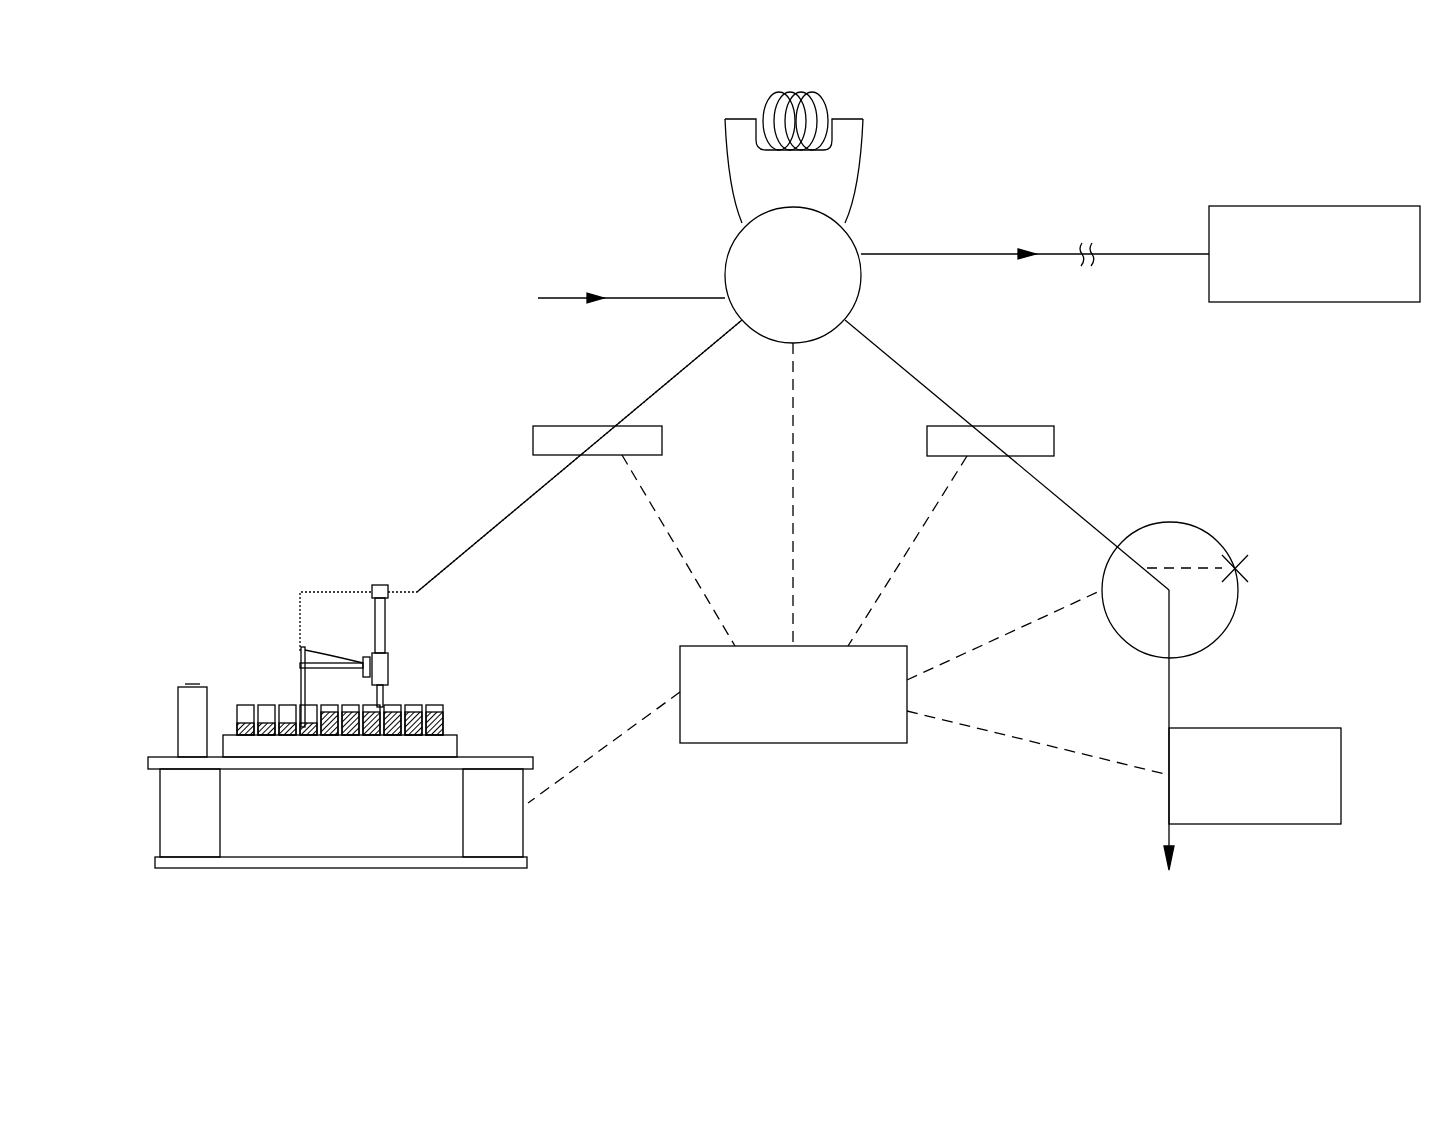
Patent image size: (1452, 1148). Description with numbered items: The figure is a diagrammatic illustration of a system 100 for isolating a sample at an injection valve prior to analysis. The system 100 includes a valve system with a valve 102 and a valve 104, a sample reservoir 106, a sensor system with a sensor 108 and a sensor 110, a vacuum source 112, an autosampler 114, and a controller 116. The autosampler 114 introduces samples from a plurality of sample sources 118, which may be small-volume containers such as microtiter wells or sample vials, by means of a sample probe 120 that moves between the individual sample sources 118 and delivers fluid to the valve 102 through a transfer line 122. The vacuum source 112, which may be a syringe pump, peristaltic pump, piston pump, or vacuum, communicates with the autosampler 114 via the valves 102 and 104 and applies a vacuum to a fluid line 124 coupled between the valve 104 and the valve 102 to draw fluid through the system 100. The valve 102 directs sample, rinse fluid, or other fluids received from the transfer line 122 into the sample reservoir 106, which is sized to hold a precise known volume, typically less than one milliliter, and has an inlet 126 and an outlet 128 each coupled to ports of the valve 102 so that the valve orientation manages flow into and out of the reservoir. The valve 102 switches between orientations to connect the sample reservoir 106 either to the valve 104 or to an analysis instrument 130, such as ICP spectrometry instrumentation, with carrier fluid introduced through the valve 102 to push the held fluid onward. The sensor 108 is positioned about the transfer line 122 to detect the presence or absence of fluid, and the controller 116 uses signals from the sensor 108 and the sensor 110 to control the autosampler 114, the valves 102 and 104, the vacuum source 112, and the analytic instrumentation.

The system 100 is at (272, 232).
The valve 102 is at (725, 276).
The valve 104 is at (1120, 647).
The sample reservoir 106 is at (800, 88).
The sensor 108 is at (533, 438).
The sensor 110 is at (1054, 441).
The vacuum source 112 is at (1341, 775).
The autosampler 114 is at (485, 648).
The controller 116 is at (790, 743).
The sample sources 118 is at (462, 705).
The sample probe 120 is at (300, 688).
The transfer line 122 is at (540, 492).
The fluid line 124 is at (1045, 492).
The inlet 126 is at (735, 203).
The outlet 128 is at (857, 203).
The analysis instrument 130 is at (1316, 205).